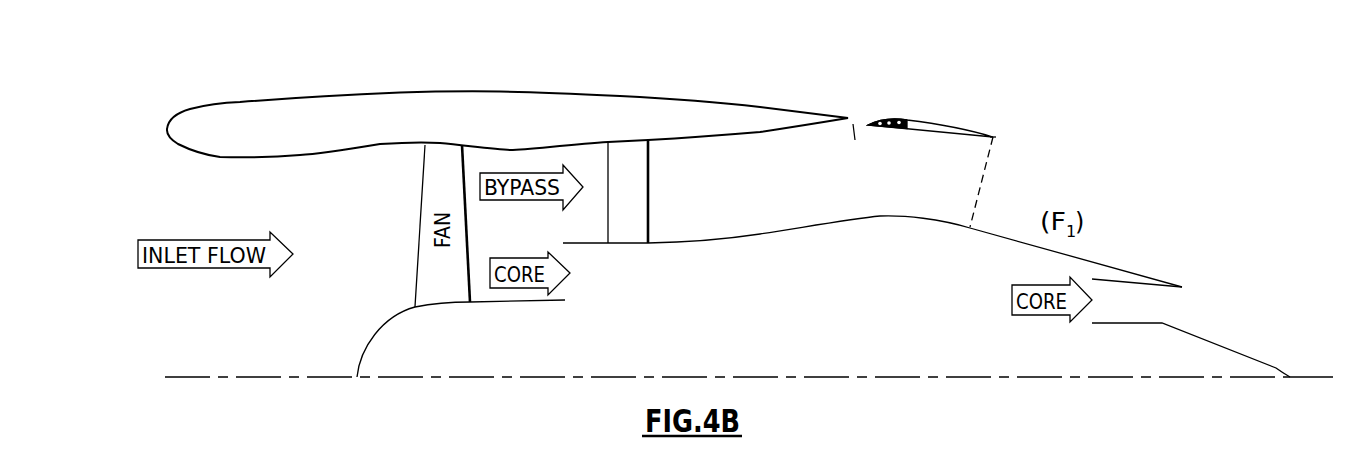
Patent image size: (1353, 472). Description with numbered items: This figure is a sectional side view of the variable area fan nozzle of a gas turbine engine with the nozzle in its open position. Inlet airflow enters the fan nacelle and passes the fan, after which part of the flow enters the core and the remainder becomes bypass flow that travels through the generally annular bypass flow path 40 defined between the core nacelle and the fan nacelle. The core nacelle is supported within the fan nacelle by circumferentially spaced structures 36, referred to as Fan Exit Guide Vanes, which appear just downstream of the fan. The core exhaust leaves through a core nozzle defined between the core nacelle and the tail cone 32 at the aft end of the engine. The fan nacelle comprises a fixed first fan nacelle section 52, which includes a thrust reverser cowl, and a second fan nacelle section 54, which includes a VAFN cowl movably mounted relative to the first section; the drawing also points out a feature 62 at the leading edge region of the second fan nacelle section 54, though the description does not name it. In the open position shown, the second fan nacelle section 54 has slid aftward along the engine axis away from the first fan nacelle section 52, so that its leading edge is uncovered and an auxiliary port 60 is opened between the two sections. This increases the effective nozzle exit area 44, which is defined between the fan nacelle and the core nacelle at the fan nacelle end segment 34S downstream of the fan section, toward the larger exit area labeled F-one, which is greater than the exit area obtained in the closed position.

The tail cone 32 is at (1230, 348).
The circumferentially spaced structures 36 is at (648, 196).
The bypass flow path 40 is at (762, 219).
The nozzle exit area 44 is at (989, 198).
The first fan nacelle section 52 is at (790, 92).
The second fan nacelle section 54 is at (951, 103).
The auxiliary port 60 is at (853, 127).
The flap hinge 62 is at (889, 110).
The fan nacelle end segment 34S is at (993, 137).